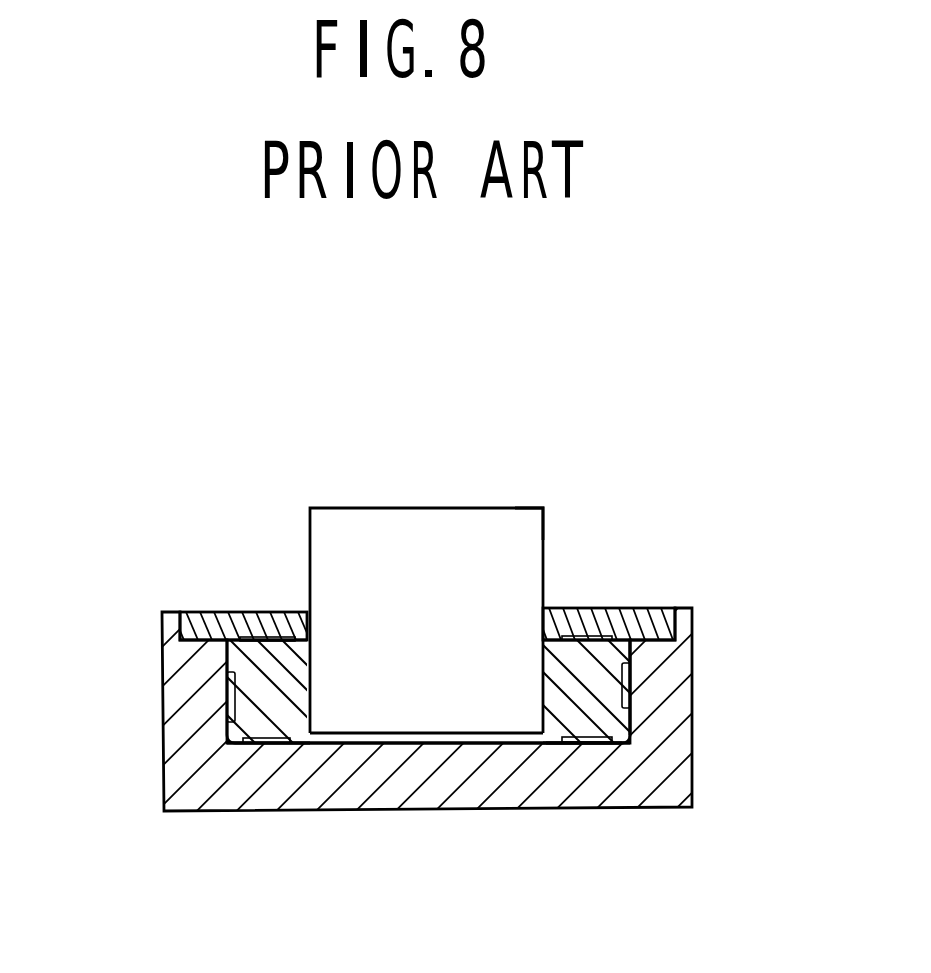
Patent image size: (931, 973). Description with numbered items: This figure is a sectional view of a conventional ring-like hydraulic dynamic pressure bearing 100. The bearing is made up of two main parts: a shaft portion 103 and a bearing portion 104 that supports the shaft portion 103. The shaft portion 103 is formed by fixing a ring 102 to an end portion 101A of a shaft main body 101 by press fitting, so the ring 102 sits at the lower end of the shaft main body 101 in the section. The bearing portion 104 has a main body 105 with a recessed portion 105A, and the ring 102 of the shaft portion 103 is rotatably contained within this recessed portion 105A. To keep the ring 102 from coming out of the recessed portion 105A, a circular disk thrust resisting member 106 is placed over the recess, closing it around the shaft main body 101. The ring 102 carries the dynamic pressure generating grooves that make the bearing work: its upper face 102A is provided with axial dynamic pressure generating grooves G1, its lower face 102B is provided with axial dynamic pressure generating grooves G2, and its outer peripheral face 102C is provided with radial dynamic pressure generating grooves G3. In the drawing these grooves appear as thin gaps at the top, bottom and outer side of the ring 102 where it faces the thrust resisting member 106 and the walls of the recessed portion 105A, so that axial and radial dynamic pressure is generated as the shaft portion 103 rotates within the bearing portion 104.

The ring-like hydraulic dynamic pressure bearing 100 is at (630, 414).
The shaft main body 101 is at (390, 533).
The end portion of the shaft main body 101A is at (447, 705).
The ring 102 is at (613, 687).
The upper face of the ring 102A is at (567, 637).
The lower face of the ring 102B is at (552, 743).
The outer peripheral face of the ring 102C is at (630, 647).
The shaft portion 103 is at (551, 518).
The bearing portion 104 is at (157, 685).
The main body of the bearing portion 105 is at (182, 773).
The recessed portion 105A is at (385, 735).
The circular disk thrust resisting member 106 is at (203, 617).
The axial dynamic pressure generating grooves G1 is at (262, 640).
The axial dynamic pressure generating grooves G2 is at (258, 745).
The radial dynamic pressure generating grooves G3 is at (228, 697).